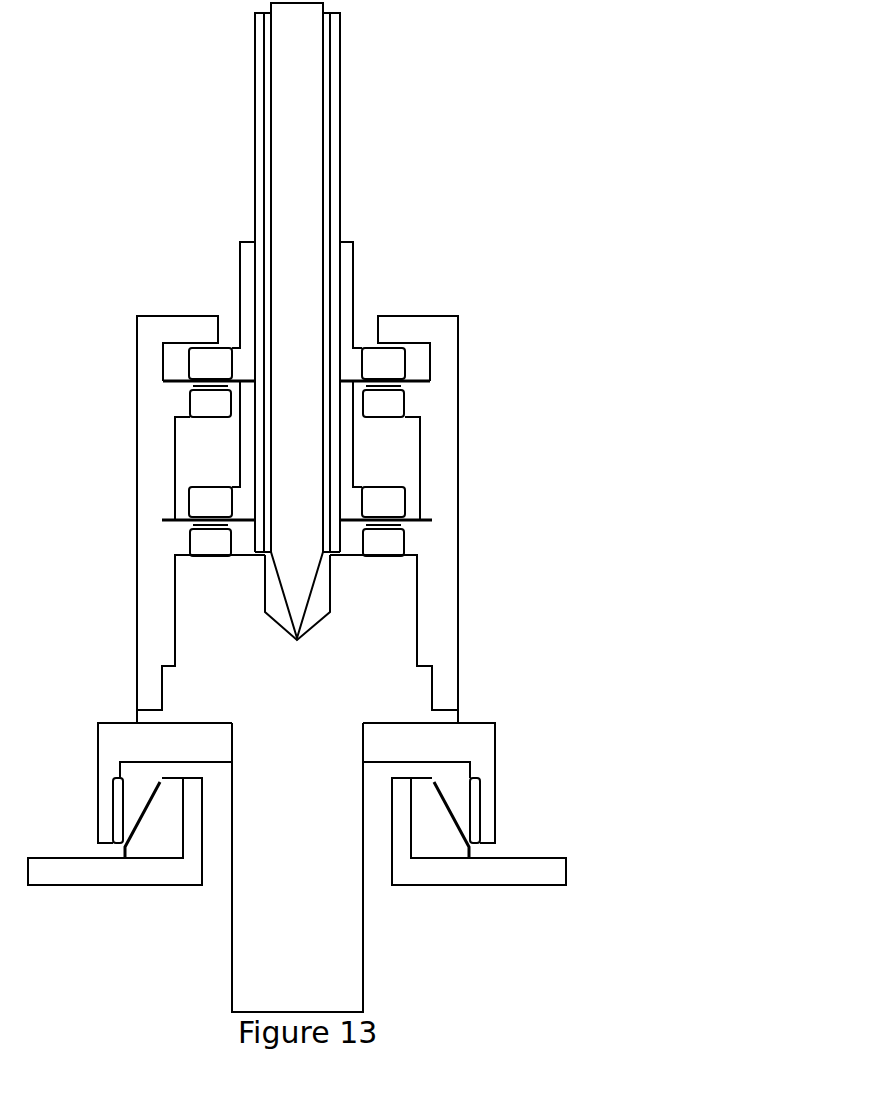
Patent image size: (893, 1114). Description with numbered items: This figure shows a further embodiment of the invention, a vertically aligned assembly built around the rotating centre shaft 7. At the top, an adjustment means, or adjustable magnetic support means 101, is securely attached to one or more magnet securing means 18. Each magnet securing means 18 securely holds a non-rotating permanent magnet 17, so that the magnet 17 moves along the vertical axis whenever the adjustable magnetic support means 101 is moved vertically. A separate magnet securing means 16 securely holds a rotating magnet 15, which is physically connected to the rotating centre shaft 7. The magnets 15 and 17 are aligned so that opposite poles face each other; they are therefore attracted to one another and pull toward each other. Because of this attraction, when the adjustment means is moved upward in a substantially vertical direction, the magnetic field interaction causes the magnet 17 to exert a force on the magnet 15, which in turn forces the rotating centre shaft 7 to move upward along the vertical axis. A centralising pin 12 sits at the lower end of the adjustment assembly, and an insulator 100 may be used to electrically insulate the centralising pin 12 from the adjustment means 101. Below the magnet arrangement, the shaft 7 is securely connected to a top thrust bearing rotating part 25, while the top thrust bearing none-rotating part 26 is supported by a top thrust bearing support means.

The insulator 100 is at (330, 105).
The adjustable magnetic support means 101 is at (340, 172).
The magnet securing means 18 is at (356, 295).
The non-rotating permanent magnet 17 is at (405, 358).
The rotating magnet 15 is at (405, 400).
The magnet securing means 16 is at (460, 428).
The centralising pin 12 is at (302, 627).
The top thrust bearing rotating part 25 is at (498, 745).
The top thrust bearing none-rotating part 26 is at (452, 803).
The rotating centre shaft 7 is at (316, 932).